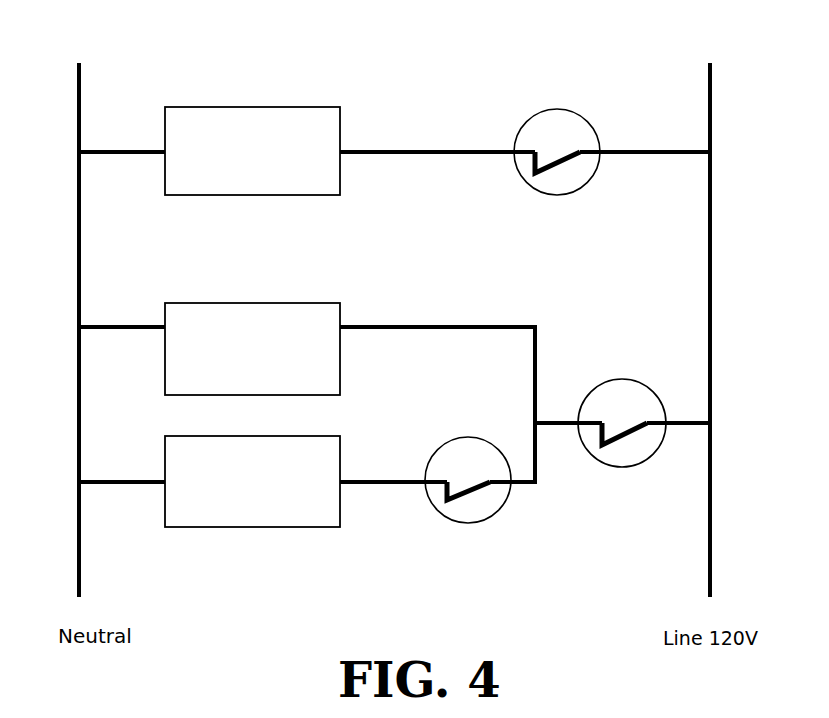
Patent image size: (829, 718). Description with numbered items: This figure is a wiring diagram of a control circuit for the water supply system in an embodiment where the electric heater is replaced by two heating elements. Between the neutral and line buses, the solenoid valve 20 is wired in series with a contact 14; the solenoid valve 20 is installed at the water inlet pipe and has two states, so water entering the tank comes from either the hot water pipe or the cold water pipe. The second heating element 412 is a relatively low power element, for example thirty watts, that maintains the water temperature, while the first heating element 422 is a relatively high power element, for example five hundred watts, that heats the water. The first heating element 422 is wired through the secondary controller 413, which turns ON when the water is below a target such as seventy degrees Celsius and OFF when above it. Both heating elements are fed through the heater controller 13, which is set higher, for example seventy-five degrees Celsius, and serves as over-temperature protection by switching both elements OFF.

The solenoid valve 20 is at (230, 107).
The contact (solenoid valve relay) 14 is at (557, 130).
The second heating element 412 is at (231, 303).
The first heating element 422 is at (297, 527).
The heater controller 13 is at (600, 403).
The secondary controller 413 is at (490, 500).